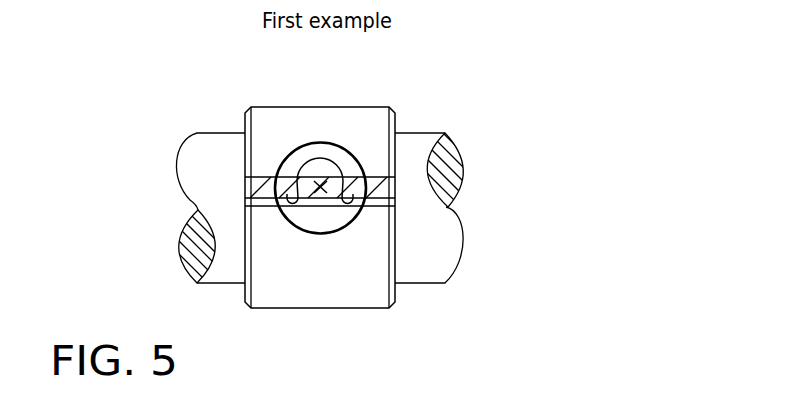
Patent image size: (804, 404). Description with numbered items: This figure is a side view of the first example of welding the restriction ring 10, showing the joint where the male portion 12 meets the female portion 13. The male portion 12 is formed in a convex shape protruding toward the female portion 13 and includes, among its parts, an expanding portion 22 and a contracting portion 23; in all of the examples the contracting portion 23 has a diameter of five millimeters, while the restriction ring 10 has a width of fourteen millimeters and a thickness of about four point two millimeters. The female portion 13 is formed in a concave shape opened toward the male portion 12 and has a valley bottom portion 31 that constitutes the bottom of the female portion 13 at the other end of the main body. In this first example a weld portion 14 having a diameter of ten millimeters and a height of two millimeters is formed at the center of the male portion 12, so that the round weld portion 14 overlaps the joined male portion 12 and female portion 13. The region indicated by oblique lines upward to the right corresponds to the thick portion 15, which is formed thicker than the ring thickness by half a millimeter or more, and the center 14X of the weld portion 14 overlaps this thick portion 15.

The restriction ring 10 is at (384, 105).
The male portion 12 is at (330, 251).
The female portion 13 is at (371, 151).
The weld portion 14 is at (289, 146).
The center of the weld portion 14X is at (318, 192).
The thick portion 15 is at (398, 186).
The expanding portion 22 is at (331, 190).
The contracting portion 23 is at (327, 170).
The valley bottom portion 31 is at (317, 153).